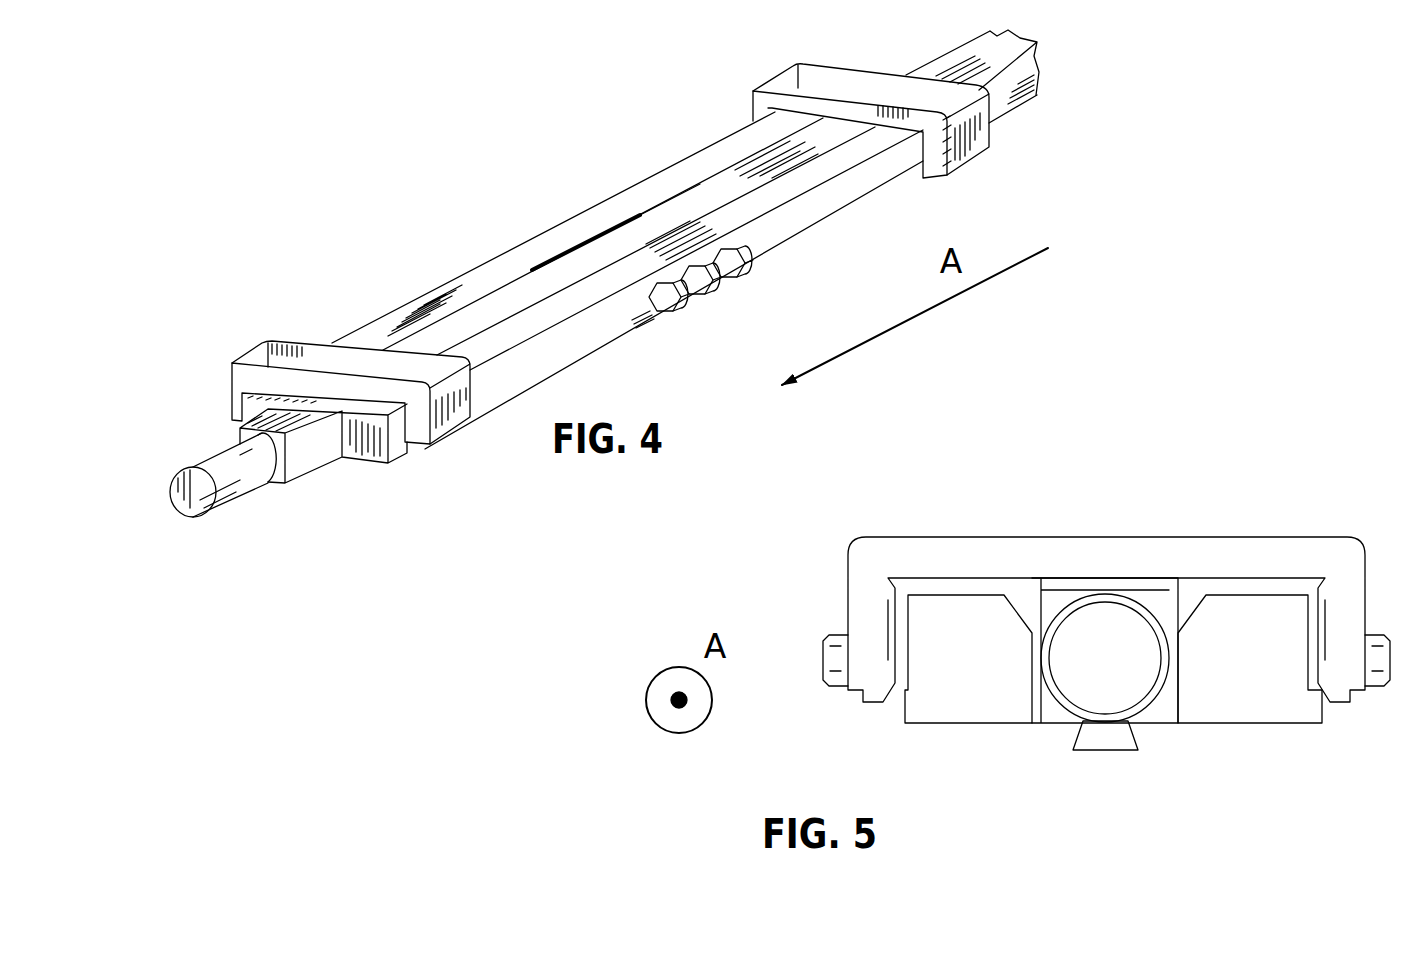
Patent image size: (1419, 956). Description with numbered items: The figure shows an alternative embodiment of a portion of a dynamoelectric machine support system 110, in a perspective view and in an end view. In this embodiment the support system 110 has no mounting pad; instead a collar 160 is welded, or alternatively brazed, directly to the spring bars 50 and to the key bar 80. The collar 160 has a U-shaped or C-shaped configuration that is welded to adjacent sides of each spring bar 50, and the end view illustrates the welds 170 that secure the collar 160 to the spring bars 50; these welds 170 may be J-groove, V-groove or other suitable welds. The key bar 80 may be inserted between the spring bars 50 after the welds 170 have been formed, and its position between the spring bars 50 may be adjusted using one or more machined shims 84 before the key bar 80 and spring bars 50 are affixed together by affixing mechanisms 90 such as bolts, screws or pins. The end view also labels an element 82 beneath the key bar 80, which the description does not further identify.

In FIG. 4, the support system 110 is at (322, 158).
In FIG. 5, the support system 110 is at (1306, 490).
In FIG. 4, the collar 160 is at (313, 352).
In FIG. 5, the collar 160 is at (1016, 556).
In FIG. 4, the spring bars 50 is at (453, 290).
In FIG. 5, the spring bars 50 is at (953, 675).
In FIG. 4, the key bar 80 is at (556, 262).
In FIG. 5, the key bar 80 is at (1092, 675).
In FIG. 4, the affixing mechanisms 90 is at (740, 312).
In FIG. 5, the welds 170 is at (872, 727).
In FIG. 5, the shims 84 is at (1026, 748).
In FIG. 5, the base 82 is at (1090, 768).